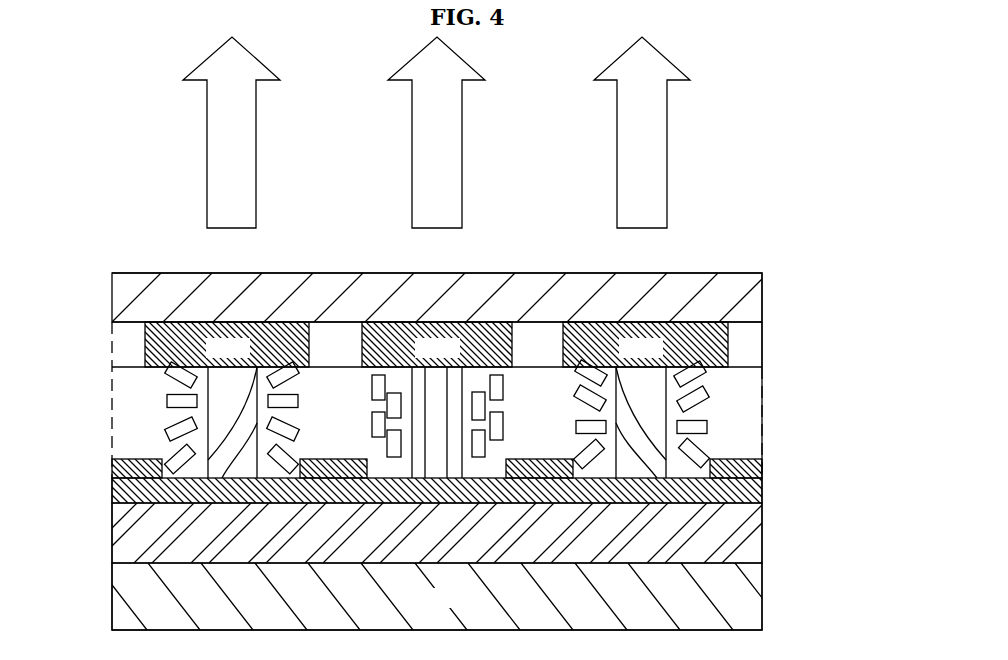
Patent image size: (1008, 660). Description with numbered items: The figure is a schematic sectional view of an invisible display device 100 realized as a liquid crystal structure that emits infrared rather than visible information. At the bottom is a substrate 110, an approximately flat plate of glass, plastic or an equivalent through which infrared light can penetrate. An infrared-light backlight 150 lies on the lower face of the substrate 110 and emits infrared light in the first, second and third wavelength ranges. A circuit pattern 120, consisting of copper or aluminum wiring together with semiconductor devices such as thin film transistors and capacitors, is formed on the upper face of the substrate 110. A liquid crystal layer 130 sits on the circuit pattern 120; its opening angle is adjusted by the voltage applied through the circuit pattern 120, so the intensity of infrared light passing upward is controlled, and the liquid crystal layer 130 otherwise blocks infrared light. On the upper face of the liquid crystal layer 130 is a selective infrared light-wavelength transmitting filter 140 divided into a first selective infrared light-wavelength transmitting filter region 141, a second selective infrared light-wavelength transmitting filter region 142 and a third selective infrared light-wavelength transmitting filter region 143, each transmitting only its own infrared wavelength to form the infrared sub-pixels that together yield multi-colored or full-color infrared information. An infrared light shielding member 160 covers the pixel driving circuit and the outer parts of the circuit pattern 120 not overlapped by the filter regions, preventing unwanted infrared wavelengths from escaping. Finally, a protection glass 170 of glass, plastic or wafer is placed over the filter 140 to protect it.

The invisible display device 100 is at (762, 207).
The substrate 110 is at (740, 540).
The circuit pattern 120 is at (752, 487).
The liquid crystal layer 130 is at (133, 417).
The selective infrared light-wavelength transmitting filter 140 is at (498, 290).
The first selective infrared light-wavelength transmitting filter region 141 is at (192, 328).
The second selective infrared light-wavelength transmitting filter region 142 is at (405, 325).
The third selective infrared light-wavelength transmitting filter region 143 is at (735, 342).
The infrared-light backlight 150 is at (750, 602).
The infrared light shielding member 160 is at (740, 463).
The protection glass 170 is at (518, 293).